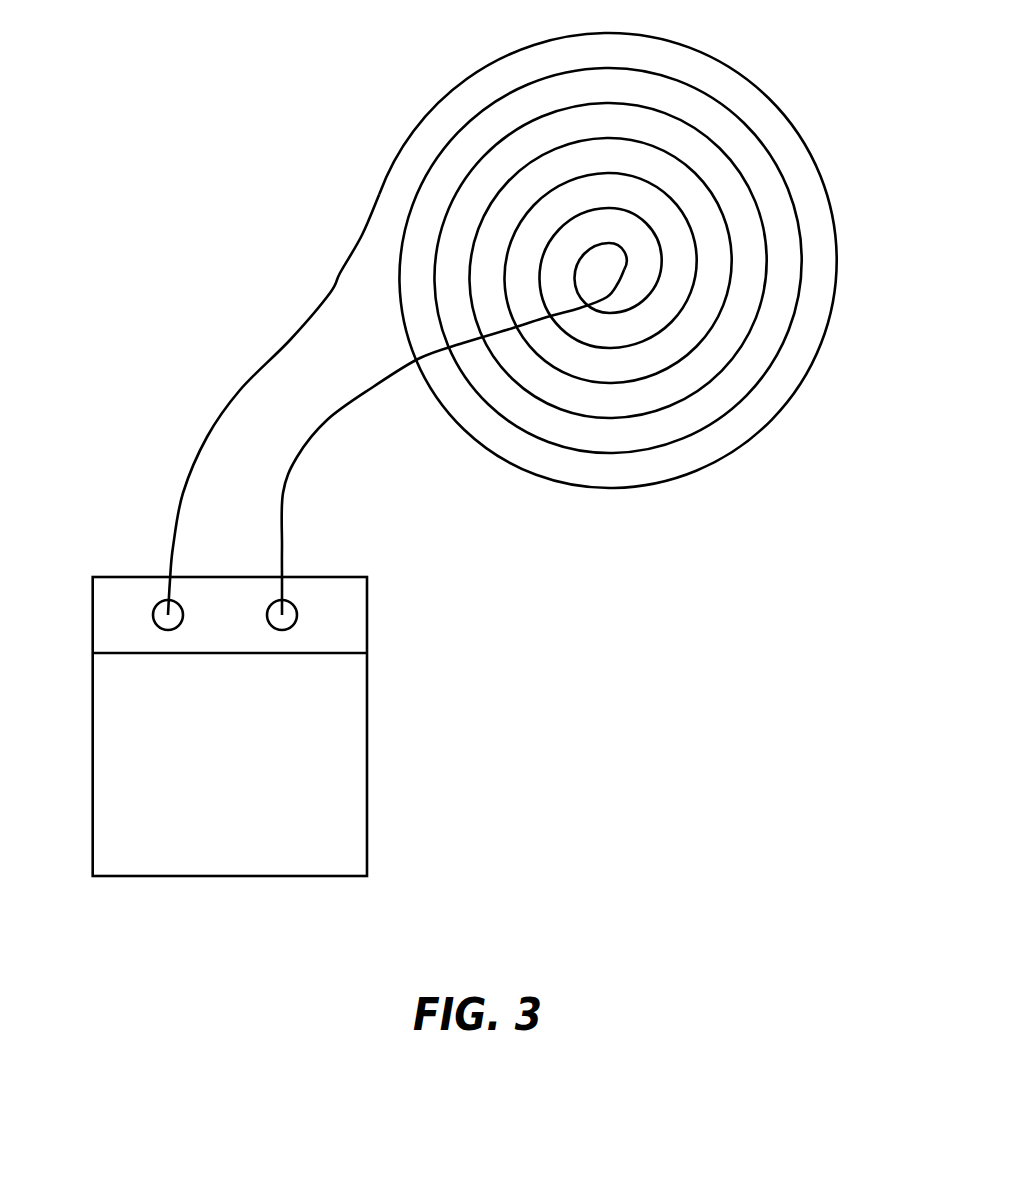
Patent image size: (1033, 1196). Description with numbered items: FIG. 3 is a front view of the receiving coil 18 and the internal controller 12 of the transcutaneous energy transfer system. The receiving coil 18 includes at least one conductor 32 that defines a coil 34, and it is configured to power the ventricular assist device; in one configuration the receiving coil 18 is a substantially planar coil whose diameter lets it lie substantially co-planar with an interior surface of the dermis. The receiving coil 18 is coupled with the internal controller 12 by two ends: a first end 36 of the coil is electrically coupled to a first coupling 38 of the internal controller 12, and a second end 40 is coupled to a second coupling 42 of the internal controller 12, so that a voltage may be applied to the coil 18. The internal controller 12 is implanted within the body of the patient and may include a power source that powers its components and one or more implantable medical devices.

The internal controller 12 is at (230, 726).
The receiving coil 18 is at (607, 313).
The conductor 32 is at (786, 405).
The coil 34 is at (453, 93).
The first end 36 is at (279, 598).
The first coupling 38 is at (287, 614).
The second end 40 is at (168, 600).
The second coupling 42 is at (162, 615).